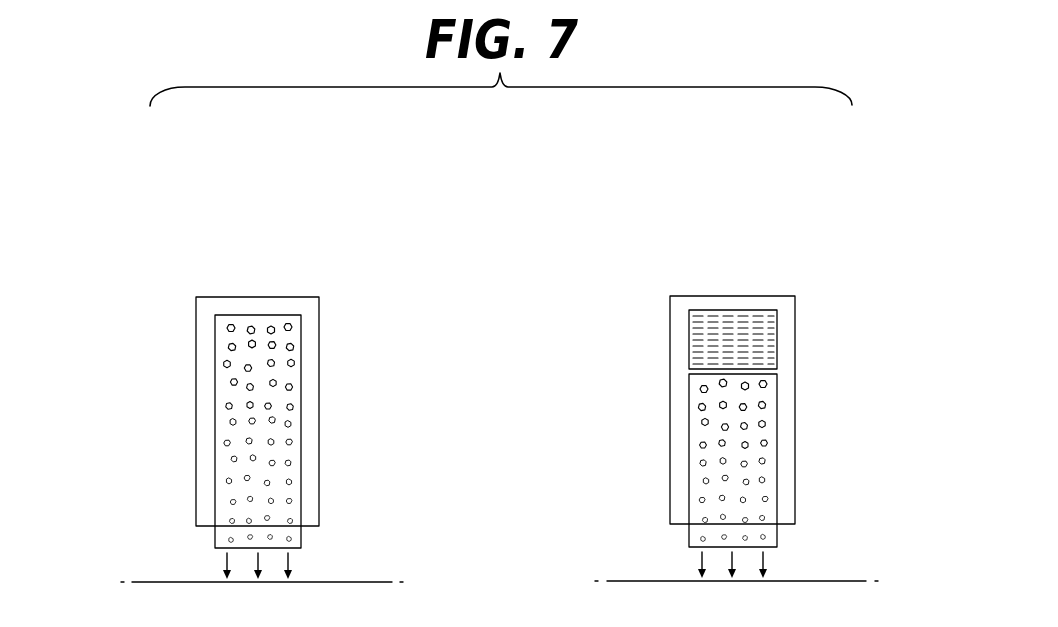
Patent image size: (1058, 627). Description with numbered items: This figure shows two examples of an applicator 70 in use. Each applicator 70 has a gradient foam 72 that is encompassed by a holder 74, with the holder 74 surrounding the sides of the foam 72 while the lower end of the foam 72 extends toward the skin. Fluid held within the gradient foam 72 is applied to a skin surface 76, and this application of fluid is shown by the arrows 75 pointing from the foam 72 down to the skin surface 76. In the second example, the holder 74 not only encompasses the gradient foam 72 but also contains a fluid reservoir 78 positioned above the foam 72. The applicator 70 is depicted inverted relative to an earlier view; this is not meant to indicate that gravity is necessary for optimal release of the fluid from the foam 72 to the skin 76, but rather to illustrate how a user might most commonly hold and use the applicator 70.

The applicator 70 is at (494, 376).
The gradient foam 72 is at (290, 438).
The holder 74 is at (699, 301).
The arrows 75 is at (310, 560).
The skin surface 76 is at (168, 582).
The fluid reservoir 78 is at (734, 335).